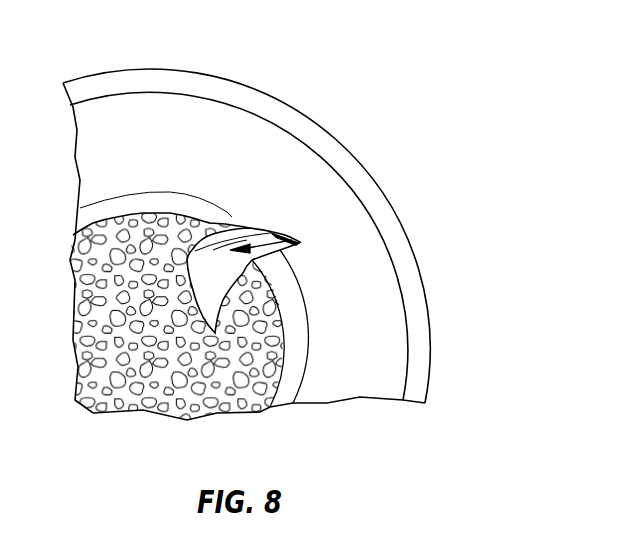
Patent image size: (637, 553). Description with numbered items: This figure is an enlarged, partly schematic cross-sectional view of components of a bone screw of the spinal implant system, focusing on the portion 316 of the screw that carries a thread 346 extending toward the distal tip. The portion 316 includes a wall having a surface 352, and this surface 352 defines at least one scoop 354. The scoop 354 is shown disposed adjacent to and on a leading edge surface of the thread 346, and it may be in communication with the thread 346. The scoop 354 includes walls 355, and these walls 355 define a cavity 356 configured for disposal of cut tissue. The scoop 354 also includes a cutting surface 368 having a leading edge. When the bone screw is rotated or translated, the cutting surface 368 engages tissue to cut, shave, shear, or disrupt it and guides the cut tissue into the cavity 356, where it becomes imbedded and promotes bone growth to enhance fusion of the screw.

The portion 316 is at (508, 225).
The thread 346 is at (389, 239).
The surface 352 is at (242, 328).
The scoop 354 is at (263, 223).
The walls 355 is at (277, 230).
The cavity 356 is at (290, 238).
The cutting surface 368 is at (227, 220).